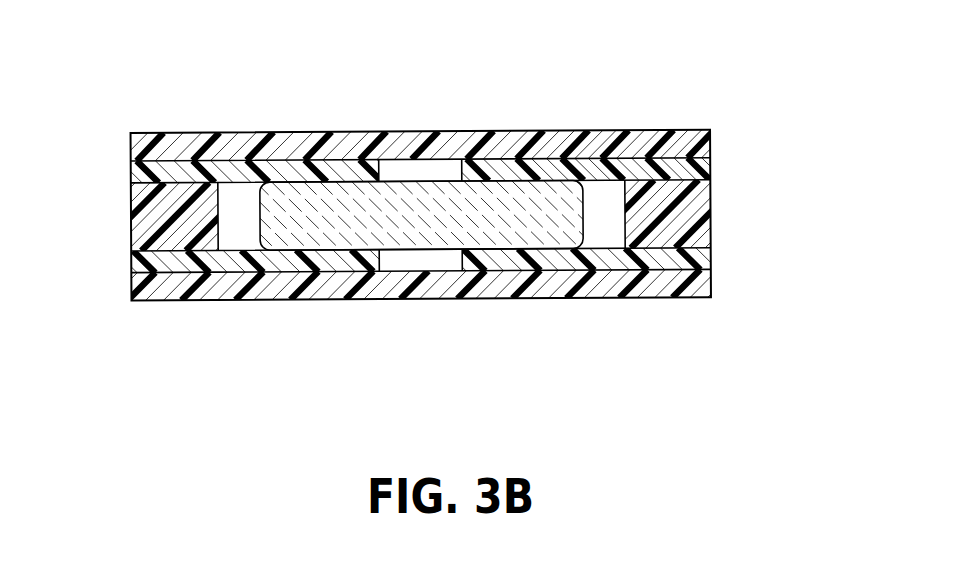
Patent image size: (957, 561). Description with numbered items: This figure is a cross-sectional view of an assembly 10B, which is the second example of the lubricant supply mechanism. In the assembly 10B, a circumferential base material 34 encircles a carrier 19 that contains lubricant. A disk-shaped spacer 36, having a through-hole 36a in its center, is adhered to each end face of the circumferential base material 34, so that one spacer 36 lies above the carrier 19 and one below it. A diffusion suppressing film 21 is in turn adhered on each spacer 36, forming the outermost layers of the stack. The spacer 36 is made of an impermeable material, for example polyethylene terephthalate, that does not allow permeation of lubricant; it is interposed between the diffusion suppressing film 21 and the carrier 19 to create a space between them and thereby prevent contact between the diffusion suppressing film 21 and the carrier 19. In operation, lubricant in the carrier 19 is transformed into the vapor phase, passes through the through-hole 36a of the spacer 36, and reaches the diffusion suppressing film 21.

The assembly 10B is at (613, 83).
The carrier 19 is at (308, 203).
The diffusion suppressing film 21 is at (513, 146).
The circumferential base material 34 is at (694, 216).
The spacer 36 is at (146, 170).
The through-hole 36a is at (419, 170).